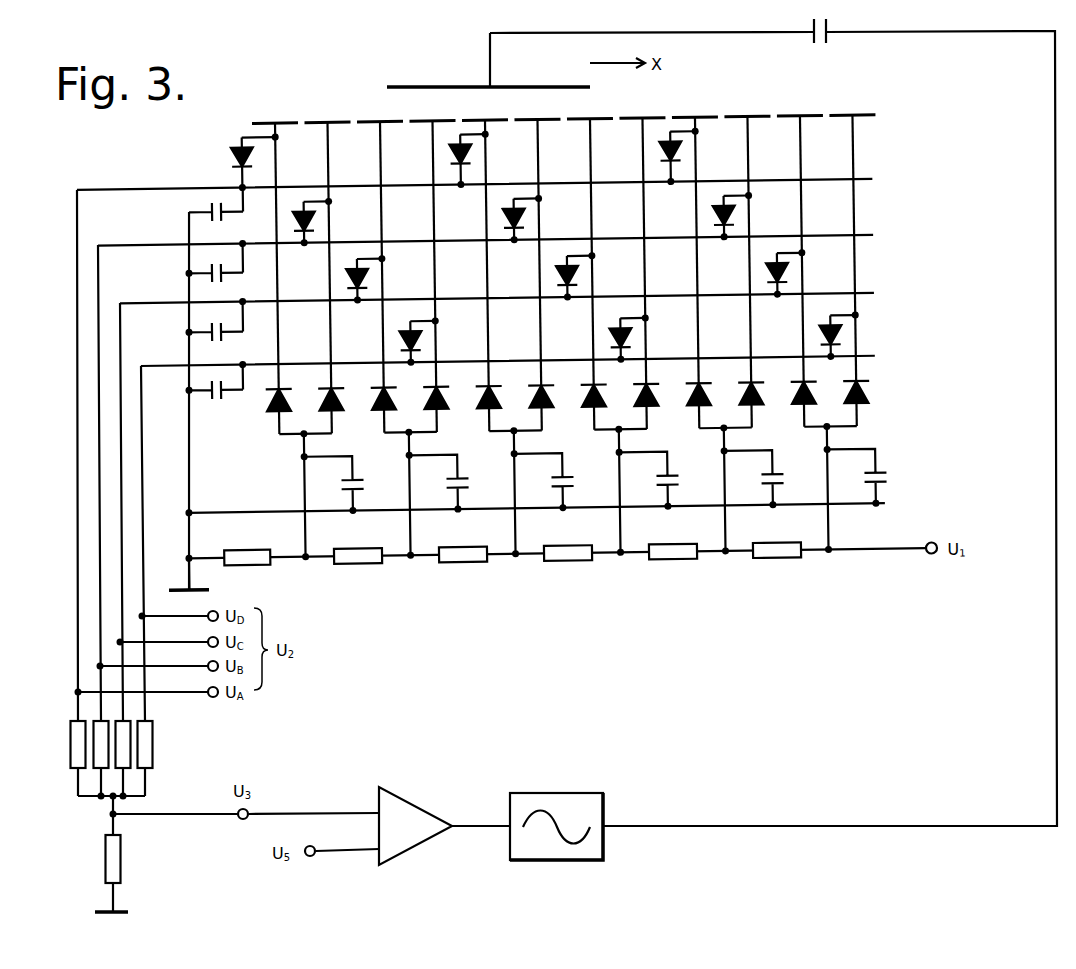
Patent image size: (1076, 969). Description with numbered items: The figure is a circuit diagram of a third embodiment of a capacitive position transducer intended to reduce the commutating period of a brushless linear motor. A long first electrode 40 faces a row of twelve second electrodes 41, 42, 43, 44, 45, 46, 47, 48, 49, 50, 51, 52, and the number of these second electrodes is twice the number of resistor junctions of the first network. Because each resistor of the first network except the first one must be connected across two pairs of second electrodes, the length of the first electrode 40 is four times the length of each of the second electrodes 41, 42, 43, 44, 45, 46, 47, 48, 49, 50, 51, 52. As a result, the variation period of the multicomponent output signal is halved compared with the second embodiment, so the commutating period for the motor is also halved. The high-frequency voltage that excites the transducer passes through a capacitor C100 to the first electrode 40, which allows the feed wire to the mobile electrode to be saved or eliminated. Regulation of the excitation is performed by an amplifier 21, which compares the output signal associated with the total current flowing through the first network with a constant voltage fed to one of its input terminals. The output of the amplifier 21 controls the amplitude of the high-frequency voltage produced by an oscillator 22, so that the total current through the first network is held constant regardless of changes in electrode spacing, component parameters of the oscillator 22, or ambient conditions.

The amplifier 21 is at (410, 815).
The oscillator 22 is at (558, 793).
The first electrode 40 is at (488, 60).
The second electrode 41 is at (277, 266).
The second electrode 42 is at (329, 265).
The second electrode 43 is at (382, 264).
The second electrode 44 is at (434, 264).
The second electrode 45 is at (487, 263).
The second electrode 46 is at (539, 262).
The second electrode 47 is at (592, 261).
The second electrode 48 is at (644, 261).
The second electrode 49 is at (697, 260).
The second electrode 50 is at (749, 259).
The second electrode 51 is at (802, 258).
The second electrode 52 is at (854, 258).
The capacitor C100 is at (818, 42).